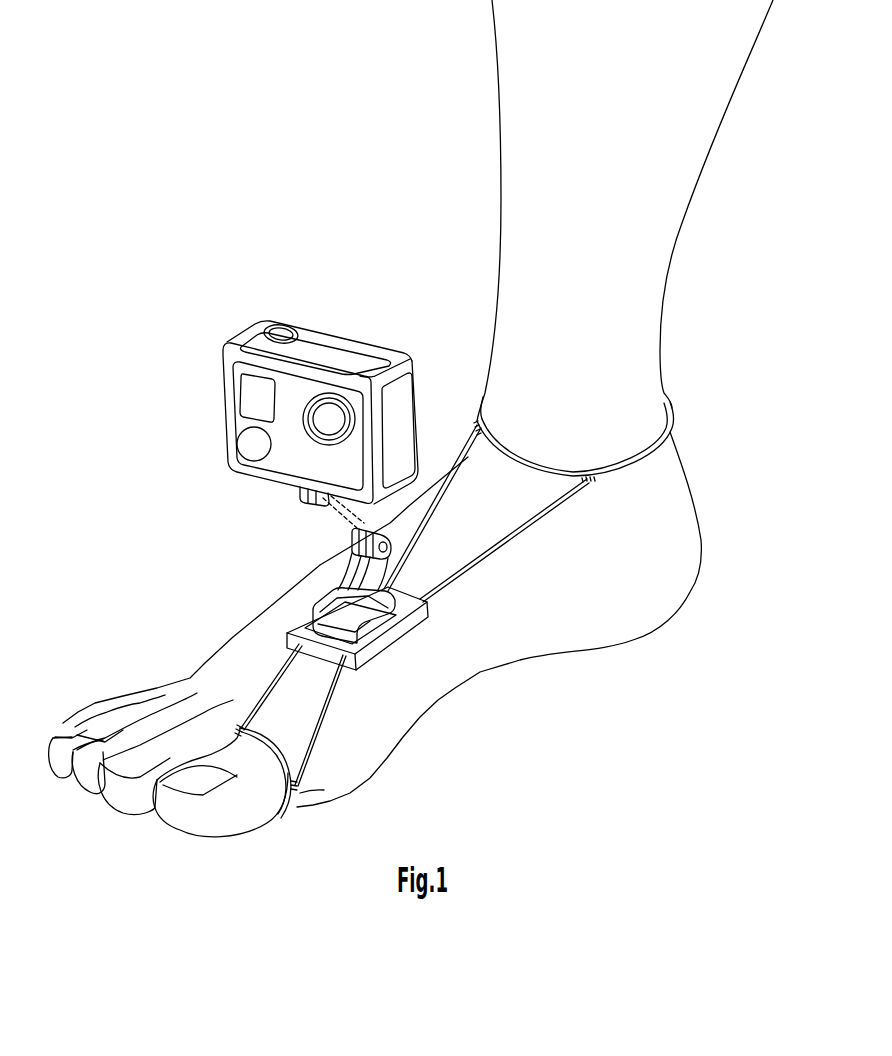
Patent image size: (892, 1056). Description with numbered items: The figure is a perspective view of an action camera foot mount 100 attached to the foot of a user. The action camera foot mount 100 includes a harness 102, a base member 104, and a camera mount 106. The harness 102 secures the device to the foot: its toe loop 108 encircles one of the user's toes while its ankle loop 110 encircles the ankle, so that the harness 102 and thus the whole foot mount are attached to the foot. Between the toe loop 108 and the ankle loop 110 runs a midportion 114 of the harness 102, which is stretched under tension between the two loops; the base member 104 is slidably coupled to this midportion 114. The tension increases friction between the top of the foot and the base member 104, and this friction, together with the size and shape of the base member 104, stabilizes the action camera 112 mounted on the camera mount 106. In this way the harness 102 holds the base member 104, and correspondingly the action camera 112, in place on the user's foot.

The action camera foot mount 100 is at (113, 312).
The harness 102 is at (437, 363).
The base member 104 is at (290, 625).
The camera mount 106 is at (355, 582).
The toe loop 108 is at (281, 748).
The ankle loop 110 is at (541, 465).
The action camera 112 is at (250, 342).
The midportion 114 is at (505, 537).